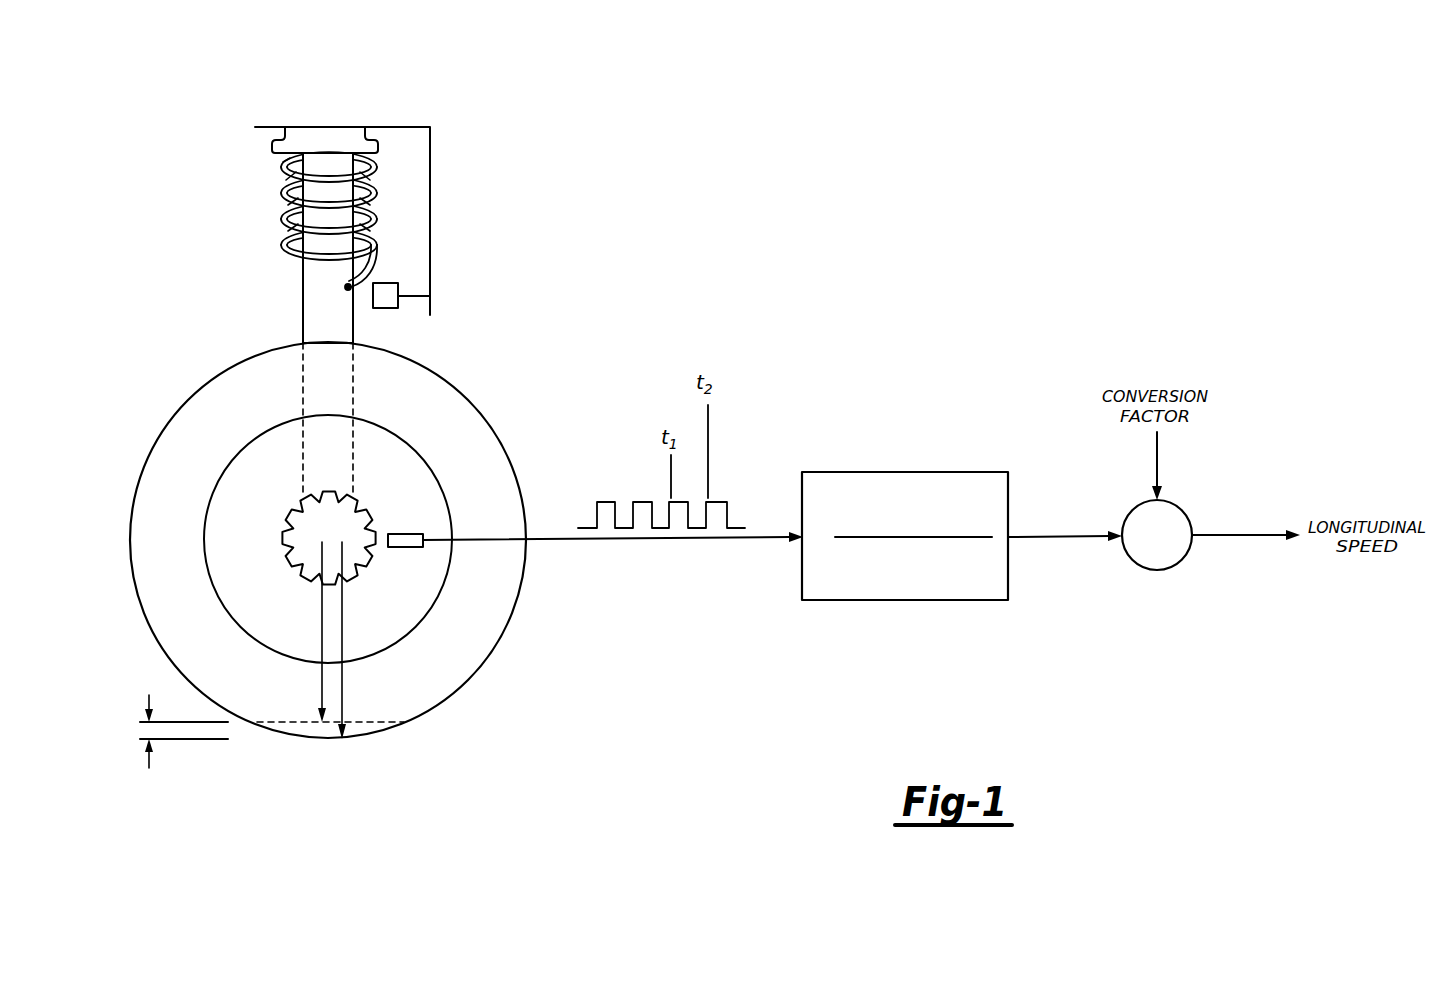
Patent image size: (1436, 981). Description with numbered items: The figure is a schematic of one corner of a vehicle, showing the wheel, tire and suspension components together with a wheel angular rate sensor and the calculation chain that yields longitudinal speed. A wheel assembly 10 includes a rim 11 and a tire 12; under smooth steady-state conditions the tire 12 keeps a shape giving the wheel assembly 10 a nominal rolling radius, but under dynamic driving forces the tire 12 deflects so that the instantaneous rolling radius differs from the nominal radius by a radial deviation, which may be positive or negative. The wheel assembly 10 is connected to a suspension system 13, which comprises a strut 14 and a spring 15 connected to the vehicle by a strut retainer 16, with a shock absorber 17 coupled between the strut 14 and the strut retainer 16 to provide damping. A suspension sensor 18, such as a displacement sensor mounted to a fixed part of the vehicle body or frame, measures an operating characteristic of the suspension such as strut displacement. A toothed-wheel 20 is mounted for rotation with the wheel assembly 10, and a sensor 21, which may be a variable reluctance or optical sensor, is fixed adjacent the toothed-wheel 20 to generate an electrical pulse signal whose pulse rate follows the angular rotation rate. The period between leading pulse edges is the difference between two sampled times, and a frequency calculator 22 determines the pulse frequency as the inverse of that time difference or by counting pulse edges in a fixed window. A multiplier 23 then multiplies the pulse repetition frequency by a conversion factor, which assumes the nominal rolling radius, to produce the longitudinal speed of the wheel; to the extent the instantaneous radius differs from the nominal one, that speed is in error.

The wheel assembly 10 is at (168, 330).
The rim 11 is at (440, 484).
The tire 12 is at (451, 383).
The suspension system 13 is at (216, 198).
The strut 14 is at (313, 318).
The spring 15 is at (299, 224).
The strut retainer 16 is at (331, 134).
The shock absorber 17 is at (300, 164).
The suspension sensor 18 is at (390, 282).
The toothed-wheel 20 is at (310, 533).
The sensor 21 is at (396, 547).
The frequency calculator 22 is at (964, 472).
The multiplier 23 is at (1167, 569).